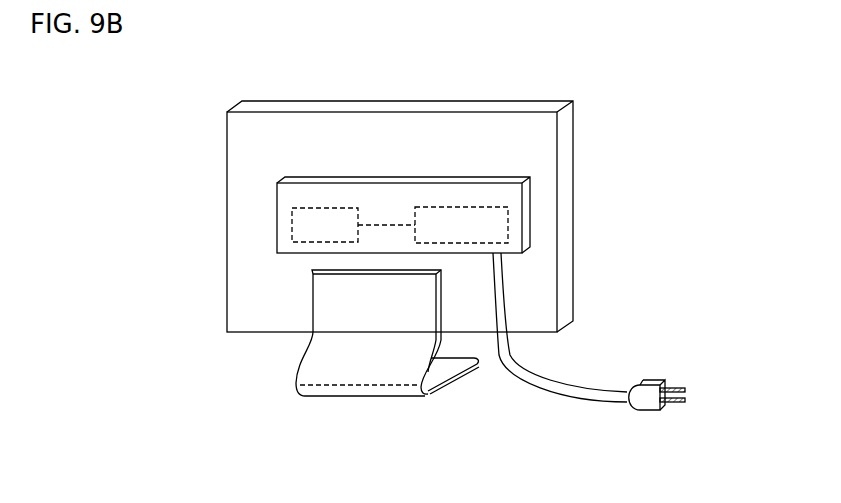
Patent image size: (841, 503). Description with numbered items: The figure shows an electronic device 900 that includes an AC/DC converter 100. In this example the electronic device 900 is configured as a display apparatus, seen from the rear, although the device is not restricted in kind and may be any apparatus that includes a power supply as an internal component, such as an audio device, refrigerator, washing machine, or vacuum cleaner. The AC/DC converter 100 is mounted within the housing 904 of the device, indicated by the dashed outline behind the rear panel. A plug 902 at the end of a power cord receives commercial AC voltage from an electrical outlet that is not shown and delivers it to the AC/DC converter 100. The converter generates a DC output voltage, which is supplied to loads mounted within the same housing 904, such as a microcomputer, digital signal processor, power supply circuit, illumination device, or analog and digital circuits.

The electronic device 900 is at (597, 120).
The housing 904 is at (453, 130).
The AC/DC converter 100 is at (493, 228).
The plug 902 is at (643, 408).